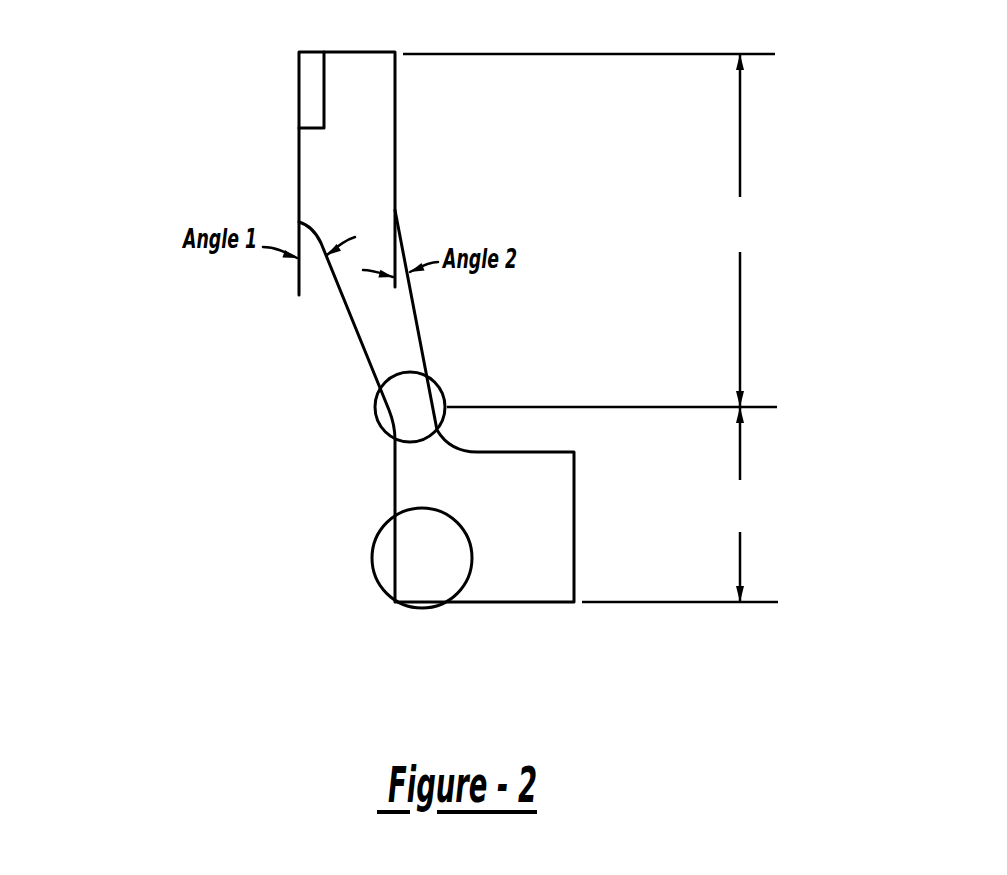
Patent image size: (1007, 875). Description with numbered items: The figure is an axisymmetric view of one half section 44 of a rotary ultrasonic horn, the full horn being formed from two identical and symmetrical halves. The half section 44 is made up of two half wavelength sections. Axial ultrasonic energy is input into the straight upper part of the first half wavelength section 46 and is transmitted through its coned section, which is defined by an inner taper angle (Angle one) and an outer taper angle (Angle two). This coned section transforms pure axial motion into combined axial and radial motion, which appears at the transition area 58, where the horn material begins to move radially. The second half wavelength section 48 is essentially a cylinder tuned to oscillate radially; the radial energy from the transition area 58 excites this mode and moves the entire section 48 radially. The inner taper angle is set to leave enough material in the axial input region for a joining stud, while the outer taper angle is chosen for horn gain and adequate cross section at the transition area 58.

The half section 44 is at (128, 217).
The first half wavelength section 46 is at (783, 160).
The second half wavelength section 48 is at (795, 460).
The transition area 58 is at (383, 430).